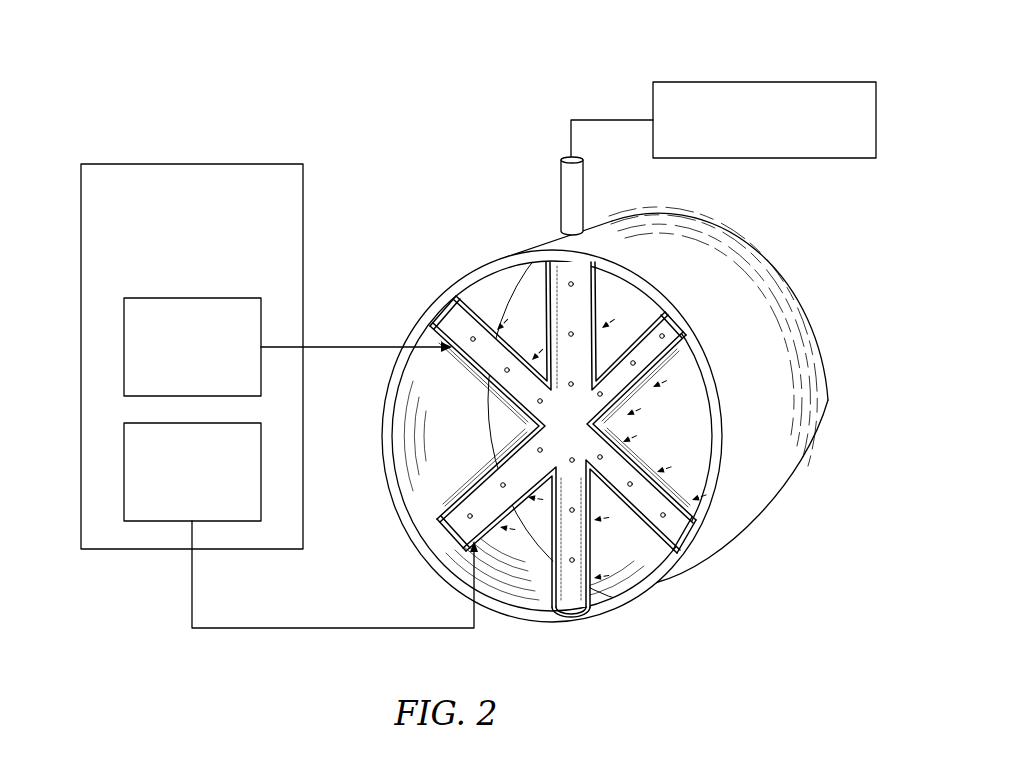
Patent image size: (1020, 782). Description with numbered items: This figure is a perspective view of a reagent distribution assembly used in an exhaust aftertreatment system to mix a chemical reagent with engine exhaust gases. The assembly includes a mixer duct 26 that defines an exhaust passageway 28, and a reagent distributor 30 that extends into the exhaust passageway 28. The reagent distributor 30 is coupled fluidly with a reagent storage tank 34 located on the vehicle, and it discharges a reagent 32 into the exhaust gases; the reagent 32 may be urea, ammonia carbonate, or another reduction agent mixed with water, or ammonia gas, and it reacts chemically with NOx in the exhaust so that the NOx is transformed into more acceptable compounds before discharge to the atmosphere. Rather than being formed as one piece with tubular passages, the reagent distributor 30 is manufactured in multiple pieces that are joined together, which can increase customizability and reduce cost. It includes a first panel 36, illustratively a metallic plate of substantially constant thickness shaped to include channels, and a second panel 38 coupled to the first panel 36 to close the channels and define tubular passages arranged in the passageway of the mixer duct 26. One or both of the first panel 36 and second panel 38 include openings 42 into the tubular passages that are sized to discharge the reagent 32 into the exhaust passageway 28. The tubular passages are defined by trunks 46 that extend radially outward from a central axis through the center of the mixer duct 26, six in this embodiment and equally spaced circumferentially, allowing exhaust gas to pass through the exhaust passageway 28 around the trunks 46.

The mixer duct 26 is at (749, 271).
The exhaust passageway 28 is at (506, 445).
The reagent distributor 30 is at (253, 352).
The reagent 32 is at (647, 410).
The reagent storage tank 34 is at (766, 82).
The first panel 36 is at (123, 347).
The second panel 38 is at (123, 473).
The openings 42 is at (462, 488).
The trunks 46 is at (500, 533).